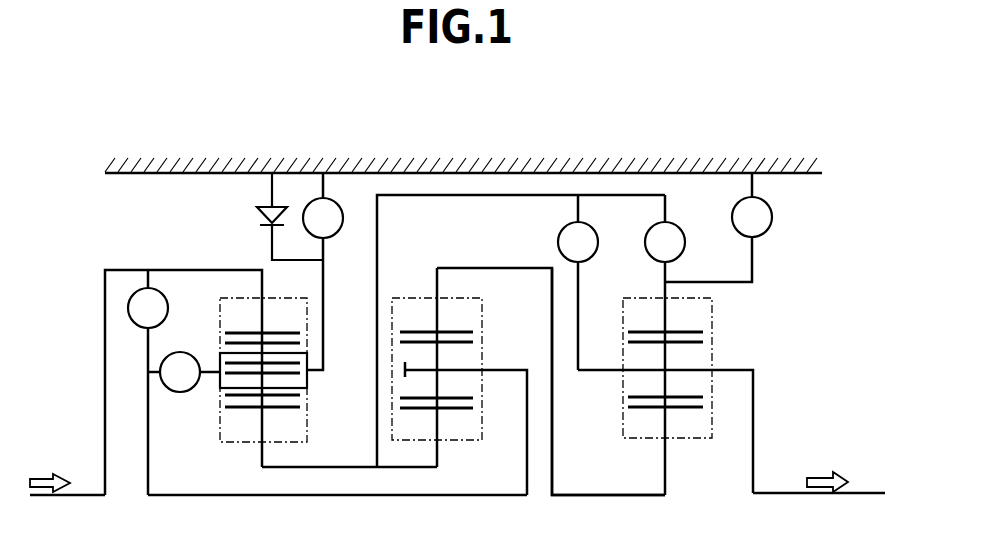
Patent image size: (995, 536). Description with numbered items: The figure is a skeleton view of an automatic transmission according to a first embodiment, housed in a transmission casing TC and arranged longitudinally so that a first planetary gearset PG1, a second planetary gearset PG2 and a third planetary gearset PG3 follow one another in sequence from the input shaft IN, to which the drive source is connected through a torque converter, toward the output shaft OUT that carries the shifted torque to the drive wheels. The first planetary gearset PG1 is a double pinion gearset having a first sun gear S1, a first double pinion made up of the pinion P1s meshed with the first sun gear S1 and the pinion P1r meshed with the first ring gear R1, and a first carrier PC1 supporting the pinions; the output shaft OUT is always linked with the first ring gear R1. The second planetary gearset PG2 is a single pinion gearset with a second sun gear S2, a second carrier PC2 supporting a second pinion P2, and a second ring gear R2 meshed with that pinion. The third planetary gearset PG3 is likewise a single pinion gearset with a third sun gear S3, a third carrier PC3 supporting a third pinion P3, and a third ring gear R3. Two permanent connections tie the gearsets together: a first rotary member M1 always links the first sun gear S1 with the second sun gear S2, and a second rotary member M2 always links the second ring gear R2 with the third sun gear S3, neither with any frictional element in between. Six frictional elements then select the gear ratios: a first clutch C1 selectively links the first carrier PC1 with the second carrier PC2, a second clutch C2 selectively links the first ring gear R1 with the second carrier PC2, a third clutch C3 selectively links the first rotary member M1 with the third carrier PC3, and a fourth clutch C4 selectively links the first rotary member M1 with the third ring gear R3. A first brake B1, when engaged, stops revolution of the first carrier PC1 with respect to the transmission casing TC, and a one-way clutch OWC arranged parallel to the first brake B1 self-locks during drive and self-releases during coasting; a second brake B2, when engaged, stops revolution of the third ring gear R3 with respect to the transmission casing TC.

The transmission casing TC is at (467, 172).
The input shaft IN is at (80, 495).
The output shaft OUT is at (858, 493).
The one-way clutch OWC is at (258, 216).
The first brake B1 is at (323, 271).
The second brake B2 is at (718, 227).
The first clutch C1 is at (184, 372).
The second clutch C2 is at (148, 382).
The third clutch C3 is at (578, 282).
The fourth clutch C4 is at (665, 345).
The first planetary gearset PG1 is at (269, 347).
The second planetary gearset PG2 is at (463, 363).
The third planetary gearset PG3 is at (690, 387).
The first ring gear R1 is at (250, 333).
The second ring gear R2 is at (453, 331).
The third ring gear R3 is at (650, 331).
The pinion P1r is at (233, 348).
The pinion P1s is at (233, 392).
The second pinion P2 is at (458, 390).
The third pinion P3 is at (648, 345).
The first carrier PC1 is at (308, 380).
The second carrier PC2 is at (467, 368).
The third carrier PC3 is at (688, 368).
The first sun gear S1 is at (245, 410).
The second sun gear S2 is at (463, 410).
The third sun gear S3 is at (648, 410).
The first rotary member M1 is at (327, 467).
The second rotary member M2 is at (552, 437).